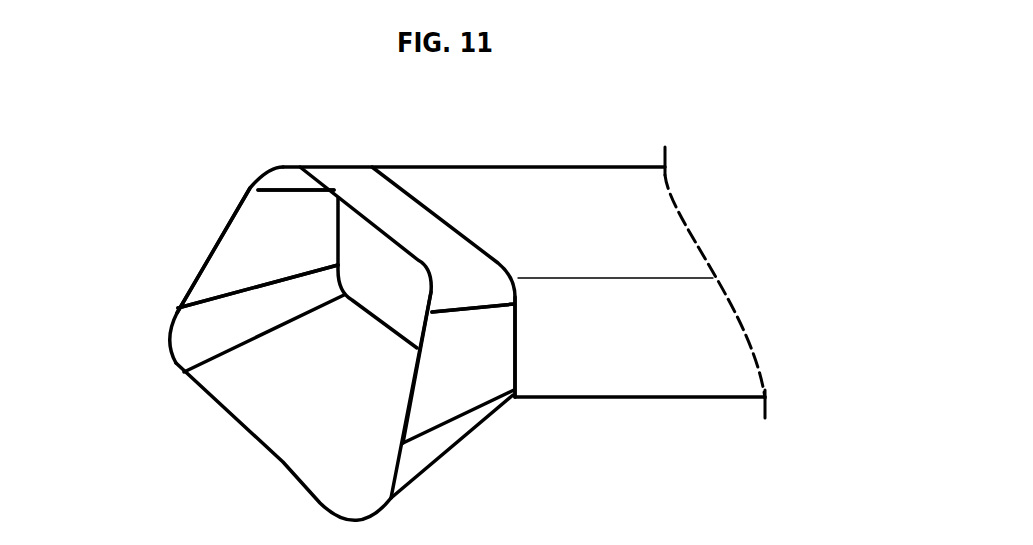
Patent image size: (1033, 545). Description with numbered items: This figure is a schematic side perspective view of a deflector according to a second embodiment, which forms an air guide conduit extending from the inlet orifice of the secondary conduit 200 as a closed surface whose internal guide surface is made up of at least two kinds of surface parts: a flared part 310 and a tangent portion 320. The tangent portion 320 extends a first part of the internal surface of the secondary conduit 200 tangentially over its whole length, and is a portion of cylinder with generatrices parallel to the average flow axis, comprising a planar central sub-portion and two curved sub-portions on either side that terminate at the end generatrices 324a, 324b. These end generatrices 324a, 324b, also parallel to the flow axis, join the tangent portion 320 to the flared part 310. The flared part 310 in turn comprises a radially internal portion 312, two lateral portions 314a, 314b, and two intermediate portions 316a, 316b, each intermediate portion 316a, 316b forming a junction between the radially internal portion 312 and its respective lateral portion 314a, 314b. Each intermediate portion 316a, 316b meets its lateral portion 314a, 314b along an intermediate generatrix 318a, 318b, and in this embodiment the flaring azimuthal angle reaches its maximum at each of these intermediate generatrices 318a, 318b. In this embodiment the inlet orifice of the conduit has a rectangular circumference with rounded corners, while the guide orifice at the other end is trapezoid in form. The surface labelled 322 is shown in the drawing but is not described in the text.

The secondary conduit 200 is at (553, 207).
The flared part 310 is at (237, 393).
The radially internal portion 312 is at (330, 447).
The lateral portion 314a is at (473, 367).
The lateral portion 314b is at (250, 243).
The intermediate portion 316a is at (435, 448).
The intermediate portion 316b is at (240, 320).
The intermediate generatrix 318a is at (460, 415).
The intermediate generatrix 318b is at (238, 312).
The tangent portion 320 is at (370, 178).
The opening 322 is at (404, 222).
The end generatrix 324a is at (473, 310).
The end generatrix 324b is at (273, 197).